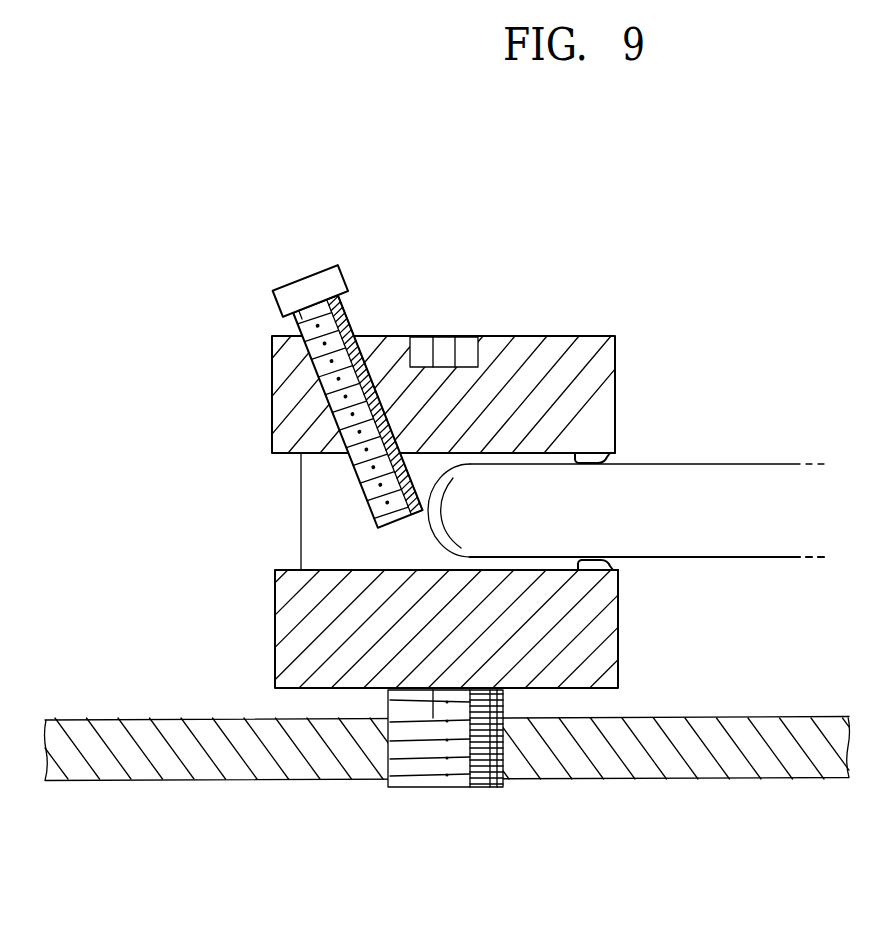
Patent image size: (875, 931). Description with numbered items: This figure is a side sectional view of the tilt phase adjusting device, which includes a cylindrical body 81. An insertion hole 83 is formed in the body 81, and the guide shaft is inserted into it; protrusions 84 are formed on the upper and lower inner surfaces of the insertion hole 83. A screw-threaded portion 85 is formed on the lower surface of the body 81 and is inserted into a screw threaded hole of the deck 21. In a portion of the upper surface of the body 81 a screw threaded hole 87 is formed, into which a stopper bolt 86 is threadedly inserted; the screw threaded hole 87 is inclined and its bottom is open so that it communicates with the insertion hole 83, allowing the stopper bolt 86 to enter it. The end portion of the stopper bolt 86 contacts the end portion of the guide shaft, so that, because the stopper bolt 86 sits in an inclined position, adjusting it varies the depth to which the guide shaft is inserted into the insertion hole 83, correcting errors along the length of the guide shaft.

The deck 21 is at (608, 763).
The cylindrical body 81 is at (575, 360).
The insertion hole 83 is at (348, 502).
The protrusions 84 is at (616, 450).
The screw-threaded portion 85 is at (433, 764).
The stopper bolt 86 is at (398, 380).
The screw threaded hole 87 is at (388, 393).